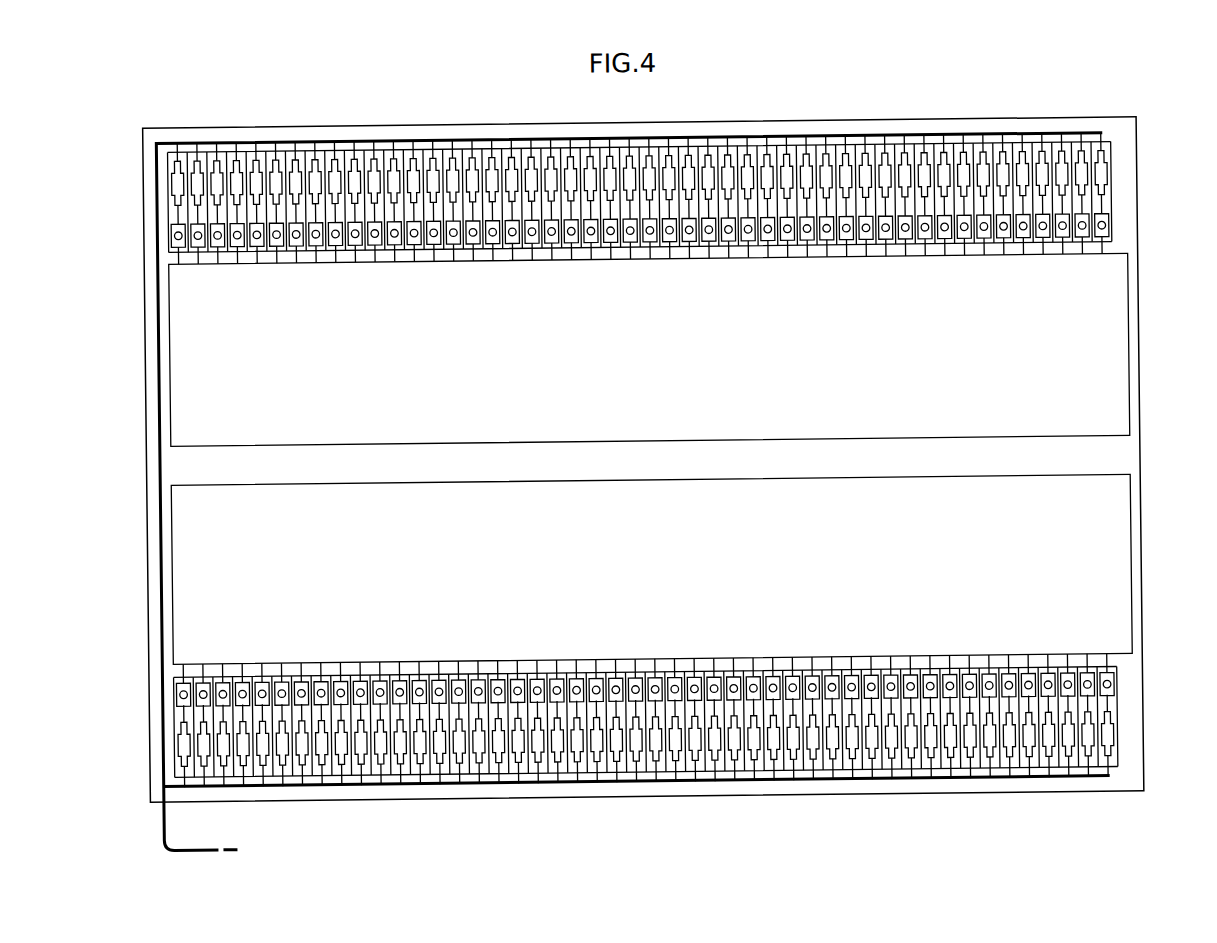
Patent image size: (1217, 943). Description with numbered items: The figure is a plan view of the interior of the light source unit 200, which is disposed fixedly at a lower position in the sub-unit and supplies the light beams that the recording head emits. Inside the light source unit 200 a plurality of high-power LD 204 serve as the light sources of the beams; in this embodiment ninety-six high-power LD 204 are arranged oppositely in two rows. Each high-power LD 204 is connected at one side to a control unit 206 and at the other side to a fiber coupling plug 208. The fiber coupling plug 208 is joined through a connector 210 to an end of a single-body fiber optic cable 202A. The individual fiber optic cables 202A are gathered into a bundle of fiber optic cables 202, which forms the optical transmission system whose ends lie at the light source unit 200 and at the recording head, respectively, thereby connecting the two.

The light source unit 200 is at (117, 99).
The fiber optic cables 202 is at (160, 833).
The fiber optic cable 202A is at (322, 150).
The high-power LD 204 is at (223, 250).
The control unit 206 is at (1130, 287).
The fiber coupling plug 208 is at (196, 220).
The connector 210 is at (200, 150).